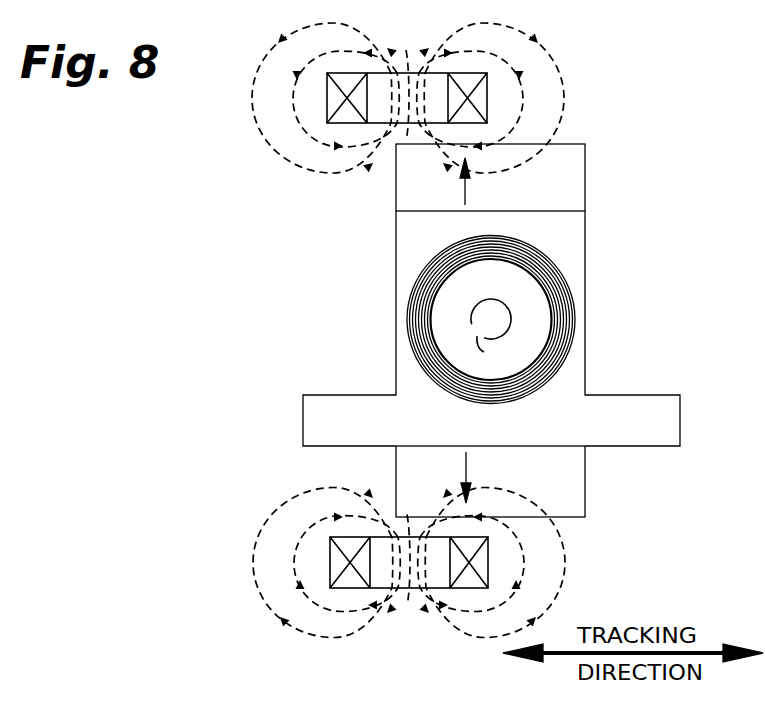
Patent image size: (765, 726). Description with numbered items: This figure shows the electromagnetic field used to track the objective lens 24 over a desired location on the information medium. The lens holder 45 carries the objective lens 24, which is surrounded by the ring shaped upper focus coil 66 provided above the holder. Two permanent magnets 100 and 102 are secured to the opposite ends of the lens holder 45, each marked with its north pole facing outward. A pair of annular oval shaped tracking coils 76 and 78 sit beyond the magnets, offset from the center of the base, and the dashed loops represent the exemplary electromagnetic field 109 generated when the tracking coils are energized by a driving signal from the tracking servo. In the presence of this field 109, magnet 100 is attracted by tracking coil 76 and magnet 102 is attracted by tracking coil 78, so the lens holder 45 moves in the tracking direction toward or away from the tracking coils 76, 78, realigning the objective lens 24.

The objective lens 24 is at (492, 335).
The lens holder 45 is at (585, 298).
The upper focus coil 66 is at (430, 292).
The tracking coil 76 is at (387, 88).
The tracking coil 78 is at (385, 572).
The permanent magnet 100 is at (572, 167).
The permanent magnet 102 is at (573, 480).
The electromagnetic field 109 is at (252, 100).